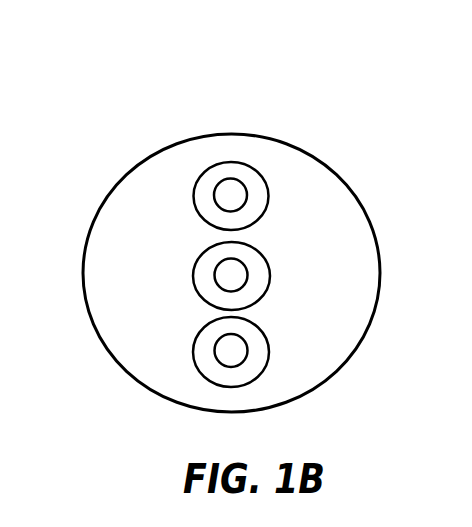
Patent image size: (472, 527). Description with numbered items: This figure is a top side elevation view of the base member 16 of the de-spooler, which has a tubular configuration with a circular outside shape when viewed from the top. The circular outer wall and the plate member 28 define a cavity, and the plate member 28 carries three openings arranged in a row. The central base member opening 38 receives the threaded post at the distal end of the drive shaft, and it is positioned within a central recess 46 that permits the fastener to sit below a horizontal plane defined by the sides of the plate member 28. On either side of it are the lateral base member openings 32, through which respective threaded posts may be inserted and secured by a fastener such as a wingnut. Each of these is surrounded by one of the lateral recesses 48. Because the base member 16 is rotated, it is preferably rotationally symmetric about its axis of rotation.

The base member 16 is at (139, 132).
The plate member 28 is at (307, 205).
The lateral base member openings 32 is at (233, 193).
The central base member opening 38 is at (234, 272).
The central recess 46 is at (255, 291).
The lateral recesses 48 is at (212, 181).